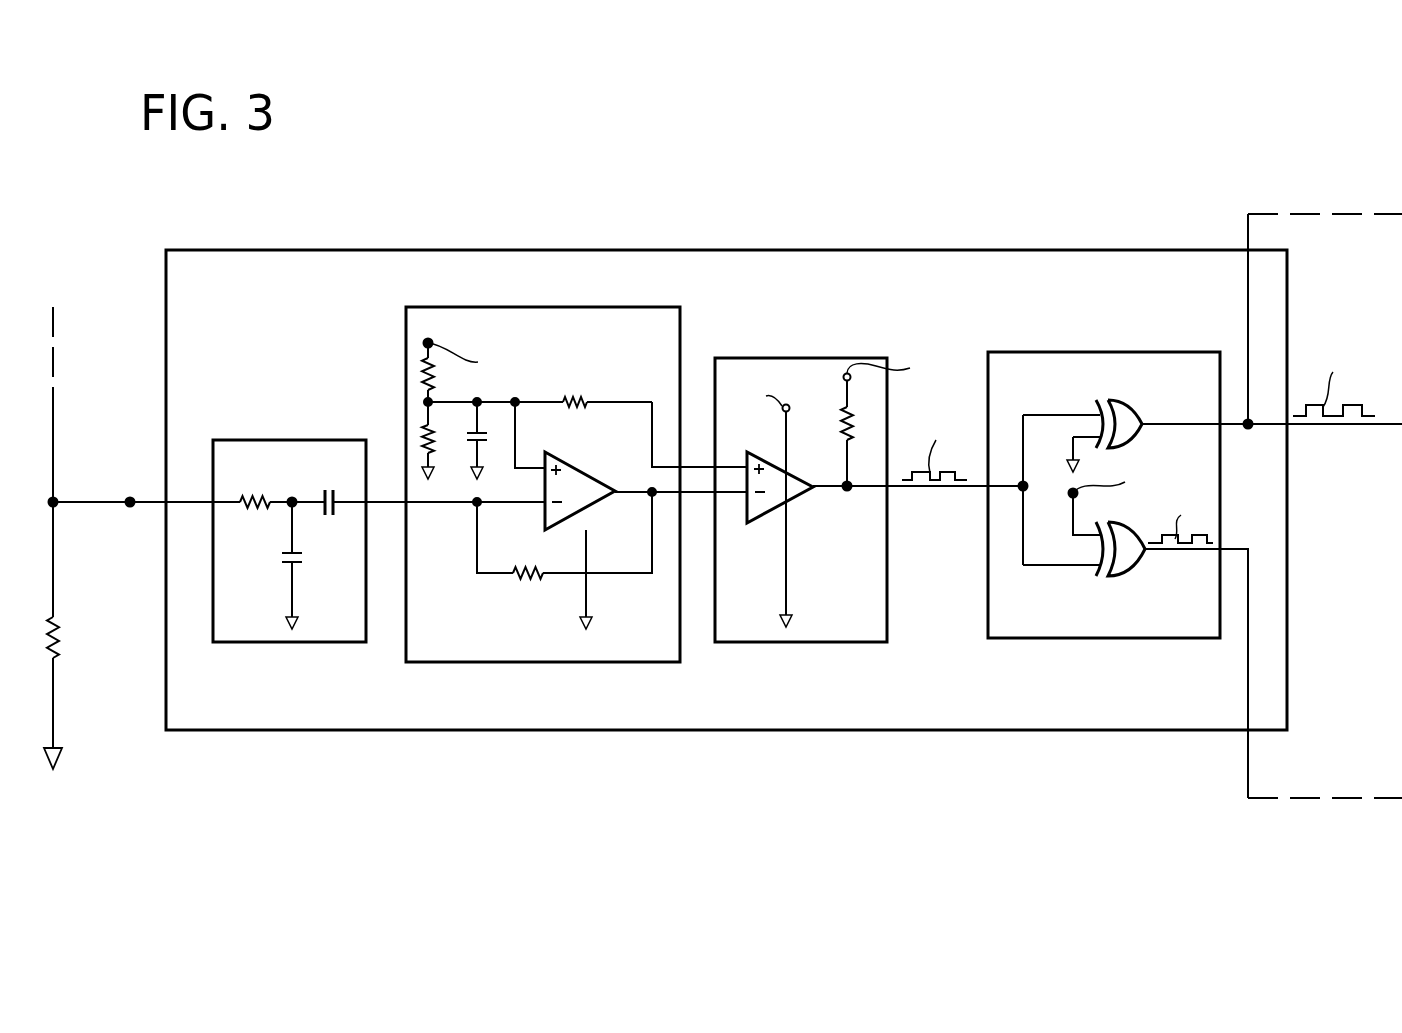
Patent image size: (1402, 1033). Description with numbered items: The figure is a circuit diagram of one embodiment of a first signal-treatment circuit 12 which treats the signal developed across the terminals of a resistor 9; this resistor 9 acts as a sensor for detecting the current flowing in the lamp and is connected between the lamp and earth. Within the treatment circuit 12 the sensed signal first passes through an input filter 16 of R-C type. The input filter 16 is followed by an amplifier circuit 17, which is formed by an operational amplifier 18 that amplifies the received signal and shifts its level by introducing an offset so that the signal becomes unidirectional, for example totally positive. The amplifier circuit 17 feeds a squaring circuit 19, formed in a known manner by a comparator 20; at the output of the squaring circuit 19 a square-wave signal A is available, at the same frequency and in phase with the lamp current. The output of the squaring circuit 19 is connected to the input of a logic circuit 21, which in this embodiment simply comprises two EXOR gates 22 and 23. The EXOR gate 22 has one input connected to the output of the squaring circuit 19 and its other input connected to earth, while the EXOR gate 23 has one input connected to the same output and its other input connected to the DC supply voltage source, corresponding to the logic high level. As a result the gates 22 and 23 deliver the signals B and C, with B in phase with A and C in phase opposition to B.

The resistor 9 is at (62, 640).
The treatment circuit 12 is at (738, 255).
The input filter 16 is at (262, 440).
The amplifier circuit 17 is at (552, 325).
The operational amplifier 18 is at (575, 483).
The squaring circuit 19 is at (807, 368).
The comparator 20 is at (798, 496).
The logic circuit 21 is at (1052, 362).
The EXOR gate 22 is at (1127, 423).
The EXOR gate 23 is at (1130, 557).